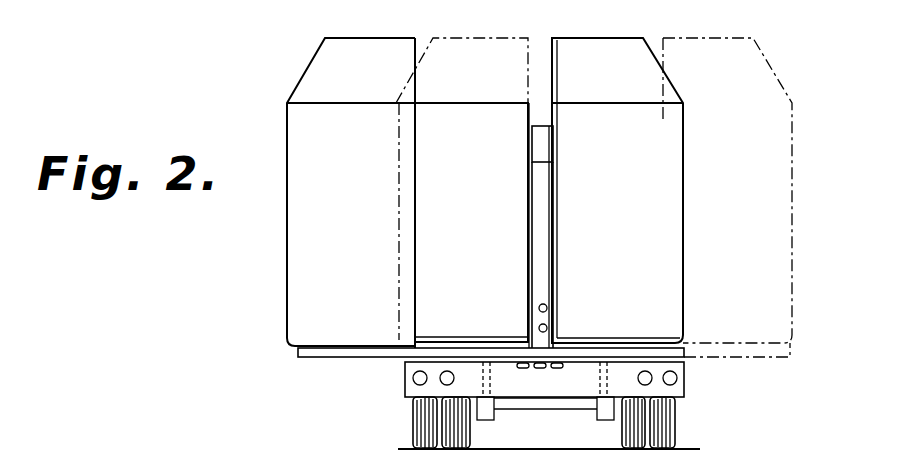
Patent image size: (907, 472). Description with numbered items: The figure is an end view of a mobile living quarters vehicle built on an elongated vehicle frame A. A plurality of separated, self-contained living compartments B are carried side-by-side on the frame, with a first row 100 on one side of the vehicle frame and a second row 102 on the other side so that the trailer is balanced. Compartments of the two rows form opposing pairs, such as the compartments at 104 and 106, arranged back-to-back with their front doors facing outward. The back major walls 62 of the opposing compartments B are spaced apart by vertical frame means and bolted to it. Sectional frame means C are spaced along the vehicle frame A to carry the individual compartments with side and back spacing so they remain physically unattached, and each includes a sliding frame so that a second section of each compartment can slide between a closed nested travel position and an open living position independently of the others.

The first row 100 is at (299, 54).
The second row 102 is at (768, 43).
The opposing compartment pair member 104 is at (287, 241).
The opposing compartment pair member 106 is at (684, 256).
The back major wall 62 is at (532, 227).
The vehicle frame A is at (685, 372).
The living compartment B is at (118, 471).
The sectional frame means C is at (333, 352).